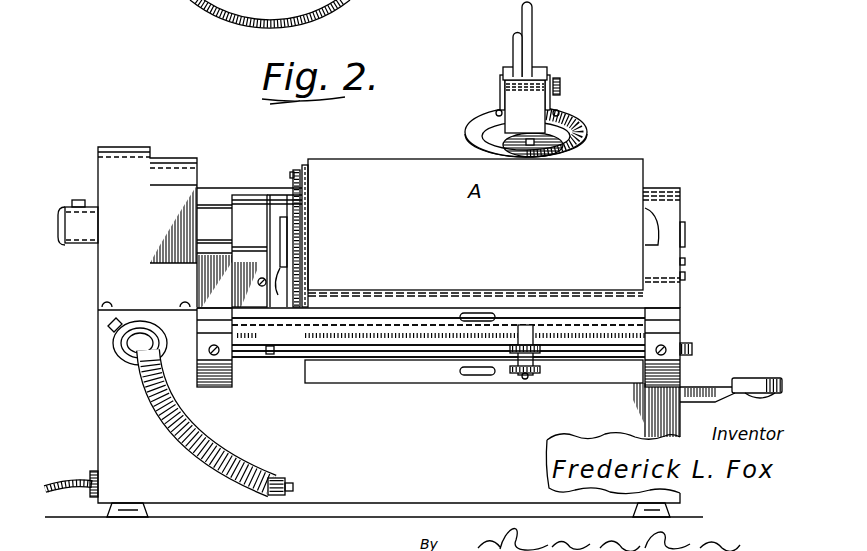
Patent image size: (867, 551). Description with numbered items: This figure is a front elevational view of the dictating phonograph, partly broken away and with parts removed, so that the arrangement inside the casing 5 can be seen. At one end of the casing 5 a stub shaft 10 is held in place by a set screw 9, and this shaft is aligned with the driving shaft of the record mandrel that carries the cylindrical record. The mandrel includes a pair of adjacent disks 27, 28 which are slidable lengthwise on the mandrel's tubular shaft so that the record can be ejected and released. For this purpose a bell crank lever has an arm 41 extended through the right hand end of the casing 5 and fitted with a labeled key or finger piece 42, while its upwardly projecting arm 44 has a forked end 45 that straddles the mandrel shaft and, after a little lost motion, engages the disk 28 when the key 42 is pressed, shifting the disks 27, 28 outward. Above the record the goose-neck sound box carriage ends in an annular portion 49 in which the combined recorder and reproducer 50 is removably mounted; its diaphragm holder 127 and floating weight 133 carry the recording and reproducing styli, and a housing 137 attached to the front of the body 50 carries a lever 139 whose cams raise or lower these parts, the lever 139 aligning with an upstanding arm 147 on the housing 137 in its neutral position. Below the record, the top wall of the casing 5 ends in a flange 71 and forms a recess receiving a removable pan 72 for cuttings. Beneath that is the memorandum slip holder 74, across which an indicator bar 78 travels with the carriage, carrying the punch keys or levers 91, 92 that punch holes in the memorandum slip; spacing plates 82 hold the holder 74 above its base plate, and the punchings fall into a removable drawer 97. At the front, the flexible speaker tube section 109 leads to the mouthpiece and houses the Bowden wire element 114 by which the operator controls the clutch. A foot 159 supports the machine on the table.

The casing 5 is at (685, 303).
The set screw 9 is at (77, 200).
The stub shaft 10 is at (62, 232).
The disk 27 is at (307, 162).
The disk 28 is at (296, 168).
The arm 41 is at (717, 387).
The key or finger piece 42 is at (768, 378).
The arm 44 is at (272, 289).
The forked end 45 is at (285, 232).
The annular upper end portion 49 is at (585, 132).
The combined recorder and reproducer 50 is at (570, 98).
The flange 71 is at (394, 327).
The pan 72 is at (587, 320).
The memorandum slip holder 74 is at (353, 350).
The indicator bar 78 is at (543, 323).
The spacing plates 82 is at (700, 355).
The key or lever 91 is at (520, 357).
The key or lever 92 is at (520, 327).
The drawer 97 is at (420, 378).
The flexible section 109 is at (183, 441).
The Bowden wire element 114 is at (282, 486).
The diaphragm holder 127 is at (472, 132).
The floating weight 133 is at (550, 149).
The housing 137 is at (541, 68).
The lever 139 is at (531, 24).
The upstanding arm 147 is at (516, 44).
The foot 159 is at (141, 503).